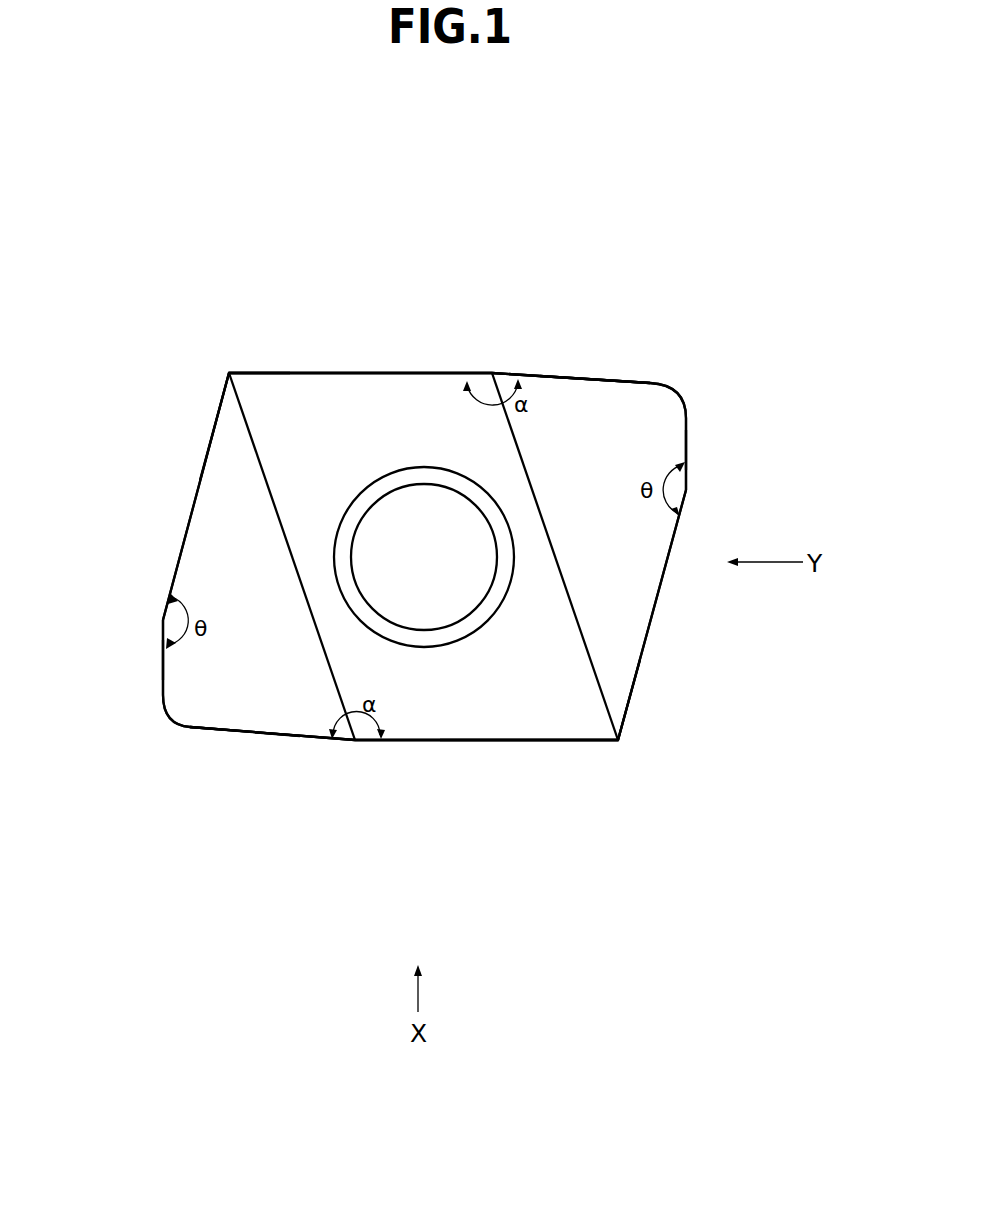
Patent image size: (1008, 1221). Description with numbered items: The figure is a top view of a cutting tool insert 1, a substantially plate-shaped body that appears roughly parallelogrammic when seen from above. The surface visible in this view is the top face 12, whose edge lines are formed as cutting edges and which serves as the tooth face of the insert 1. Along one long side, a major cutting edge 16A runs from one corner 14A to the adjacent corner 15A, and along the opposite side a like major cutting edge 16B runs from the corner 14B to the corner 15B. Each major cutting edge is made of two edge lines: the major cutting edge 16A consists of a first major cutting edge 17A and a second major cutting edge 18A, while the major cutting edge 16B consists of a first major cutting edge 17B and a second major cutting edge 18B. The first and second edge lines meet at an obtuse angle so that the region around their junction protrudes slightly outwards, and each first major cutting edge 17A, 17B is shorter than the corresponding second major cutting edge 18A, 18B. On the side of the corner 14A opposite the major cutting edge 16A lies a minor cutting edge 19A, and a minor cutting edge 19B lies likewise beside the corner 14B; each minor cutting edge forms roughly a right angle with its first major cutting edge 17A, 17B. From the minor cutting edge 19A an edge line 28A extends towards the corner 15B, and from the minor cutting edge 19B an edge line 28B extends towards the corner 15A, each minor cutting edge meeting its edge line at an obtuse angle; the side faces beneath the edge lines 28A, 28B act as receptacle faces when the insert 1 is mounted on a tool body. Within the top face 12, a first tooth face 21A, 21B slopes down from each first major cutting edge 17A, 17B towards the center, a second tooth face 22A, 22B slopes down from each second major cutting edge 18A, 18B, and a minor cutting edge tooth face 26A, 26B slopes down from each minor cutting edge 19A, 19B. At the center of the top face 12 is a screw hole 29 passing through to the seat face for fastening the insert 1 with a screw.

The cutting tool insert 1 is at (690, 312).
The top face 12 is at (493, 720).
The corner 14A is at (175, 725).
The corner 14B is at (680, 398).
The corner 15A is at (618, 740).
The corner 15B is at (229, 373).
The major cutting edge 16A is at (440, 882).
The major cutting edge 16B is at (520, 248).
The first major cutting edge 17A is at (284, 740).
The first major cutting edge 17B is at (537, 376).
The second major cutting edge 18A is at (433, 740).
The second major cutting edge 18B is at (398, 373).
The minor cutting edge 19A is at (163, 683).
The minor cutting edge 19B is at (686, 430).
The first tooth face 21A is at (250, 700).
The first tooth face 21B is at (580, 422).
The second tooth face 22A is at (627, 650).
The second tooth face 22B is at (258, 497).
The minor cutting edge tooth face 26A is at (193, 671).
The minor cutting edge tooth face 26B is at (648, 447).
The edge line 28A is at (195, 500).
The edge line 28B is at (658, 600).
The screw hole 29 is at (432, 630).